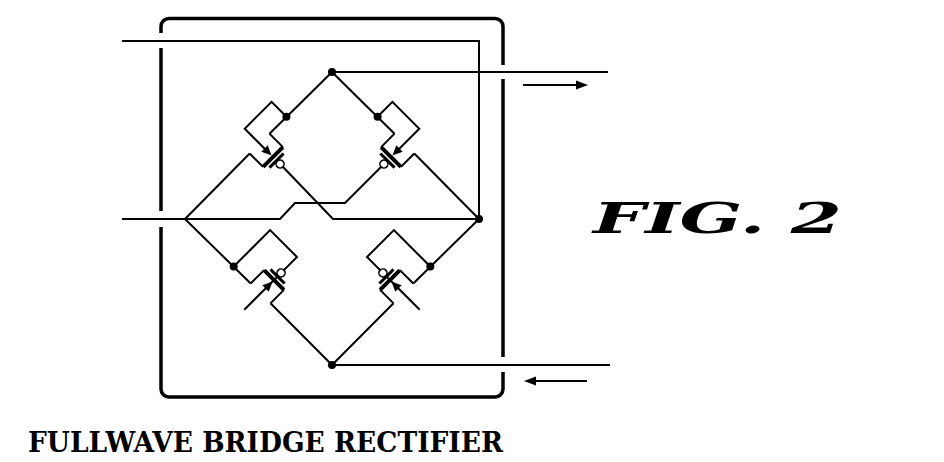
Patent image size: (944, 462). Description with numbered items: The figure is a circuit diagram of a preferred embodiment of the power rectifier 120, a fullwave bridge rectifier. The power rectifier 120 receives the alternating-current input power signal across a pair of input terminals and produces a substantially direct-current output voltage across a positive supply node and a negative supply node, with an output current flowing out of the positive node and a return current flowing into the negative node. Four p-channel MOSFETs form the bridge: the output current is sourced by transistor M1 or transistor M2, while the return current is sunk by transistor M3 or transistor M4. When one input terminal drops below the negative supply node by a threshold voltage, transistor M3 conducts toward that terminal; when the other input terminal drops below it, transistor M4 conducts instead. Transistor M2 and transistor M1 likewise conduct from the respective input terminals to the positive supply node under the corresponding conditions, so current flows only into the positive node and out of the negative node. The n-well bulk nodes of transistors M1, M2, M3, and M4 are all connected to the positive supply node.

The power rectifier 120 is at (714, 293).
The transistor M1 is at (272, 156).
The transistor M2 is at (392, 156).
The transistor M3 is at (247, 267).
The transistor M4 is at (425, 267).